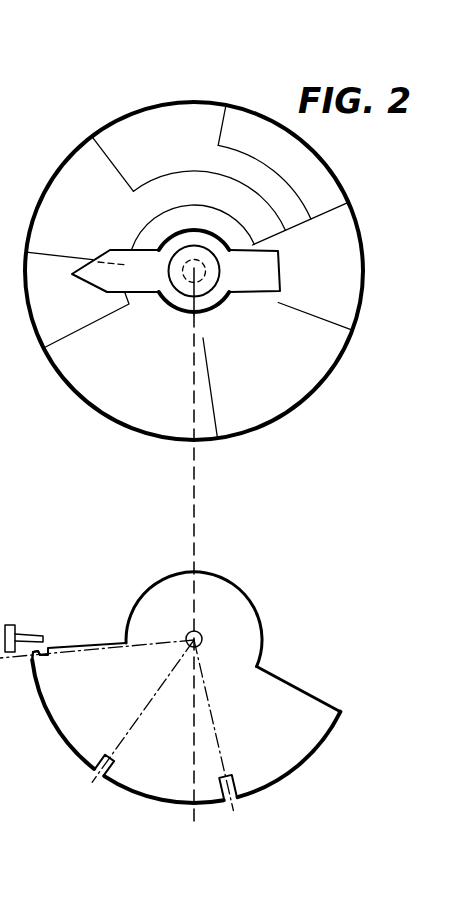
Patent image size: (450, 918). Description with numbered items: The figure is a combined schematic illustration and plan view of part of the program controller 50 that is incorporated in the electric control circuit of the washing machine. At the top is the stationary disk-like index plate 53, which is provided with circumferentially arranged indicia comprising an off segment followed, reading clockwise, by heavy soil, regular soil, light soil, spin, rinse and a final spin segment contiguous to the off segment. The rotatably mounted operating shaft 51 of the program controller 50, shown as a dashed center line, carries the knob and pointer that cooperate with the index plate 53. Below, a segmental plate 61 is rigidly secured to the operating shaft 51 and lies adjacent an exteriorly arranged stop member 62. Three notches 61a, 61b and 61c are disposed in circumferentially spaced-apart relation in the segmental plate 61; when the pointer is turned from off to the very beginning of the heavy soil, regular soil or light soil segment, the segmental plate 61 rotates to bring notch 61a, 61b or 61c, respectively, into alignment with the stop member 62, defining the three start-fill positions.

The program controller 50 is at (164, 549).
The operating shaft 51 is at (165, 478).
The index plate 53 is at (72, 375).
The segmental plate 61 is at (65, 700).
The notch 61a is at (32, 661).
The notch 61b is at (114, 755).
The notch 61c is at (228, 776).
The stop member 62 is at (38, 637).